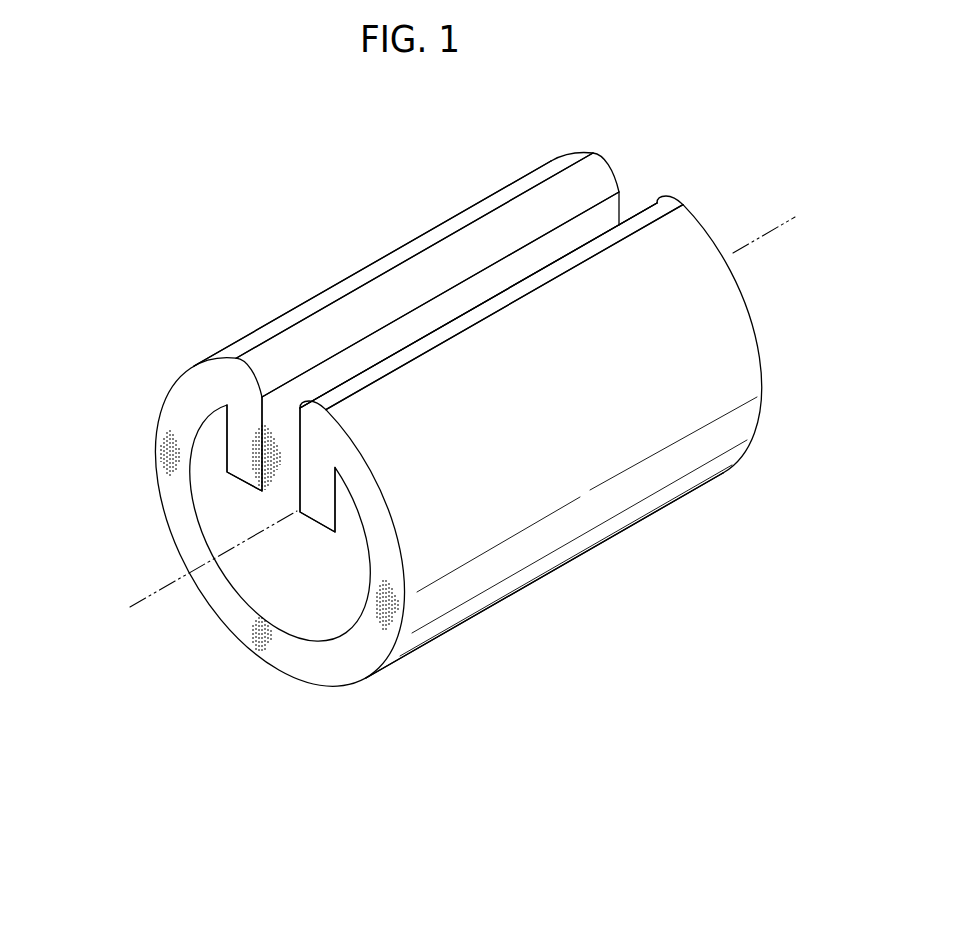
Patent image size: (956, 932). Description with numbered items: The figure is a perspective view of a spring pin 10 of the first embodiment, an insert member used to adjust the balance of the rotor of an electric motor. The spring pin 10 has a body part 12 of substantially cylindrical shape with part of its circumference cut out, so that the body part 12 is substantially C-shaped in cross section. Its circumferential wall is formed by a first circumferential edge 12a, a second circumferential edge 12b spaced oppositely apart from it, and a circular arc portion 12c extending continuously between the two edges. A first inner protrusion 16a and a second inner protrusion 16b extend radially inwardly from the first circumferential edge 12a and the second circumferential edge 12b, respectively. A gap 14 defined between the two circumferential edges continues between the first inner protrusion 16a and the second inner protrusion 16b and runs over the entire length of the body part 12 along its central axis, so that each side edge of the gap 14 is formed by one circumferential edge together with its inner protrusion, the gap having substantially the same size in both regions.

The spring pin 10 is at (345, 245).
The body part 12 is at (707, 262).
The first circumferential edge 12a is at (230, 380).
The second circumferential edge 12b is at (323, 440).
The circular arc portion 12c is at (350, 662).
The gap 14 is at (282, 398).
The first inner protrusion 16a is at (240, 480).
The second inner protrusion 16b is at (312, 508).